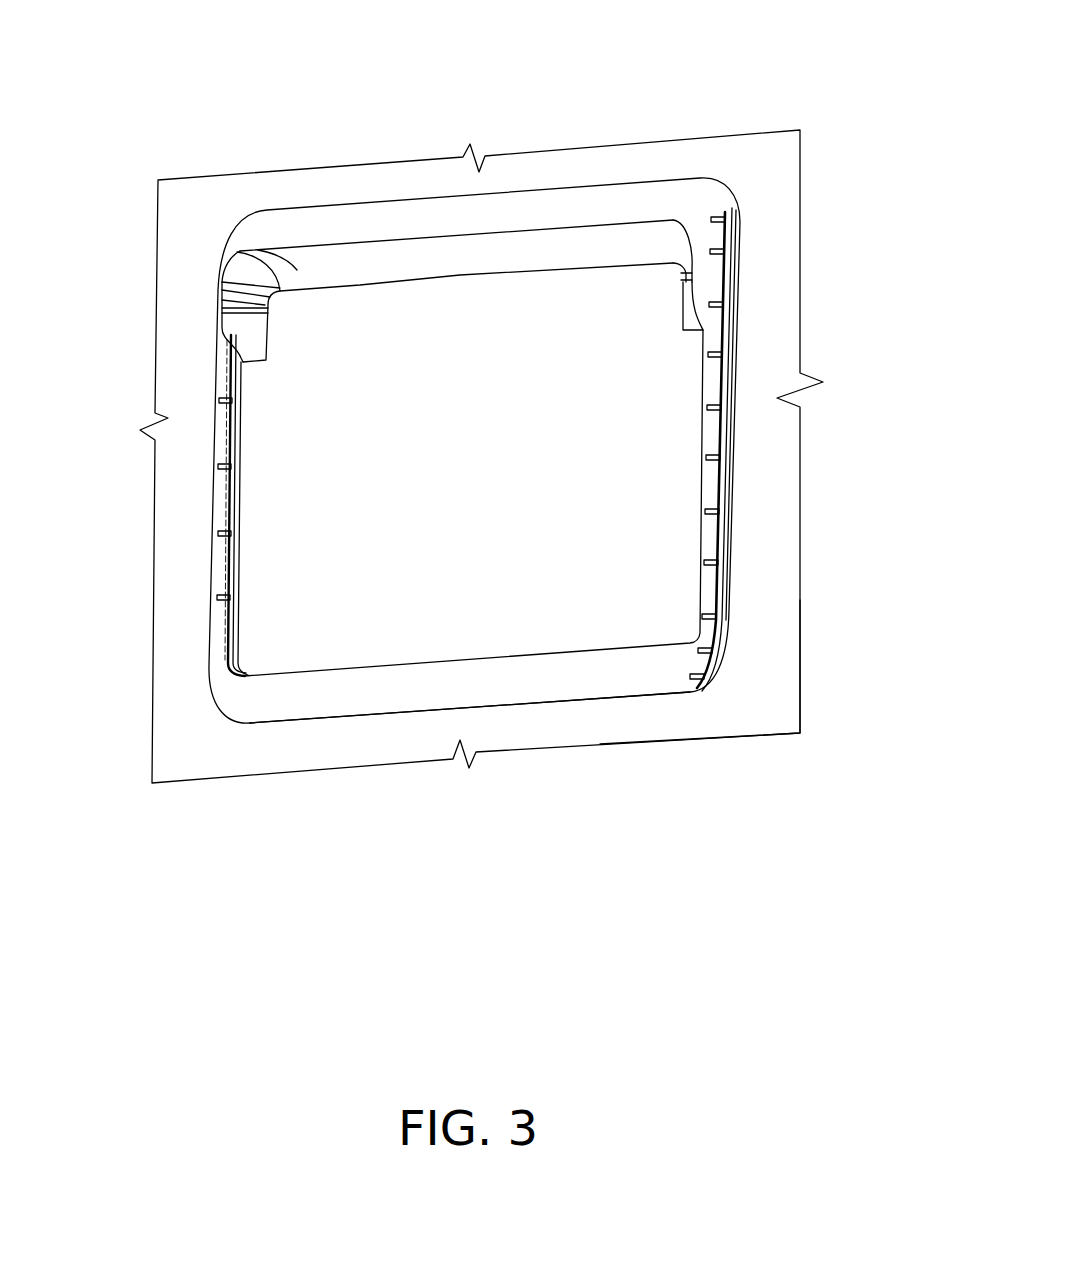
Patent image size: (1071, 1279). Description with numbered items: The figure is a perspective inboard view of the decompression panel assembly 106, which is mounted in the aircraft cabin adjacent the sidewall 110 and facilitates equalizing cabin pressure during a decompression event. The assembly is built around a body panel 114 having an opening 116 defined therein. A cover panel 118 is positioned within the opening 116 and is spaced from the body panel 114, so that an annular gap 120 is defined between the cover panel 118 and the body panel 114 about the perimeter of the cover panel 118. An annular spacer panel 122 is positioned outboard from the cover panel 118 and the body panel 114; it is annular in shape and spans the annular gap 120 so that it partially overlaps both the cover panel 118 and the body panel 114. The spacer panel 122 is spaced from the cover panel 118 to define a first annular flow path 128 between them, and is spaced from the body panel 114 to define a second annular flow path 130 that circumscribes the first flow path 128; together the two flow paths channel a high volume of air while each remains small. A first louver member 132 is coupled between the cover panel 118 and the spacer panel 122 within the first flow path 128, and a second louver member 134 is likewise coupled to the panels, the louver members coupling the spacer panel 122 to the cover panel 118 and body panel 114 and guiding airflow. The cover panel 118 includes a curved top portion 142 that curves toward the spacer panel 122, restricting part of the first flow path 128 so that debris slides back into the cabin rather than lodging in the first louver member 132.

The decompression panel assembly 106 is at (810, 80).
The sidewall 110 is at (497, 168).
The body panel 114 is at (763, 717).
The opening 116 is at (713, 677).
The cover panel 118 is at (633, 607).
The annular gap 120 is at (304, 700).
The annular spacer panel 122 is at (355, 220).
The first annular flow path 128 is at (212, 437).
The second annular flow path 130 is at (690, 183).
The first louver member 132 is at (222, 537).
The second louver member 134 is at (738, 248).
The curved top portion 142 is at (240, 251).